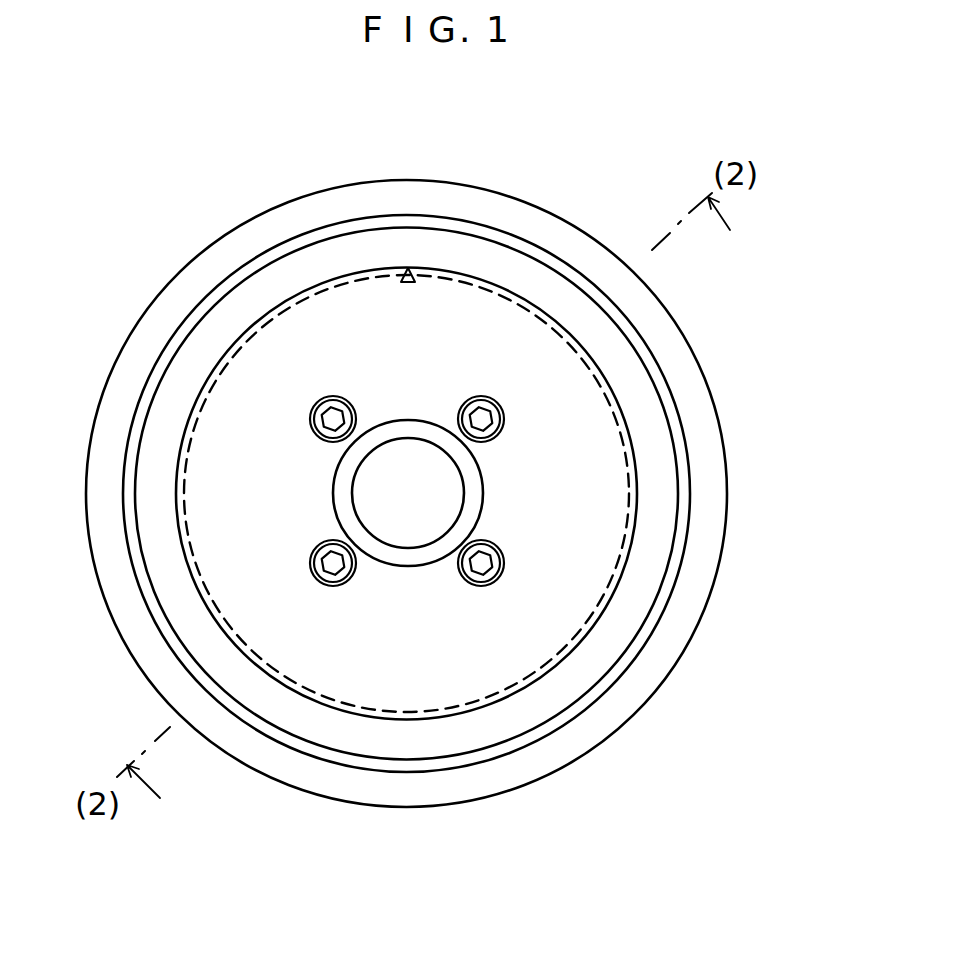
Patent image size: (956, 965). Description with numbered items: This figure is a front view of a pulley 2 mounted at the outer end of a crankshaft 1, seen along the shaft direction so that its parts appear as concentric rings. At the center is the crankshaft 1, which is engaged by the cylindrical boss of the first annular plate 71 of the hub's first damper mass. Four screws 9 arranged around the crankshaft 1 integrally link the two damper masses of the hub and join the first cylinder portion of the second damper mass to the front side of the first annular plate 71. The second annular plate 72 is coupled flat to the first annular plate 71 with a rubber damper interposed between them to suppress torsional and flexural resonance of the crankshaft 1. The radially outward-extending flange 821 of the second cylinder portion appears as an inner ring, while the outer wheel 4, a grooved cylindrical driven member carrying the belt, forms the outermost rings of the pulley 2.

The crankshaft 1 is at (445, 492).
The pulley 2 is at (463, 493).
The outer wheel 4 is at (627, 560).
The screws 9 is at (463, 410).
The first annular plate 71 is at (665, 508).
The second annular plate 72 is at (707, 457).
The flange 821 is at (572, 610).